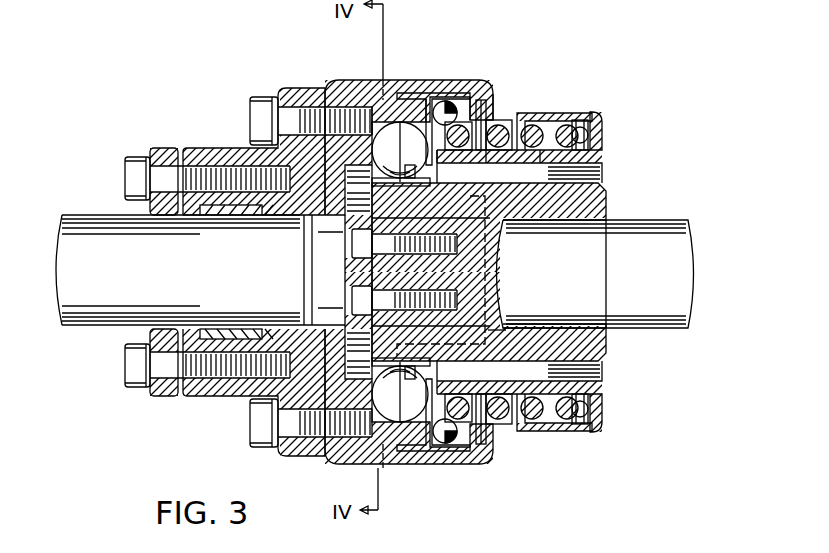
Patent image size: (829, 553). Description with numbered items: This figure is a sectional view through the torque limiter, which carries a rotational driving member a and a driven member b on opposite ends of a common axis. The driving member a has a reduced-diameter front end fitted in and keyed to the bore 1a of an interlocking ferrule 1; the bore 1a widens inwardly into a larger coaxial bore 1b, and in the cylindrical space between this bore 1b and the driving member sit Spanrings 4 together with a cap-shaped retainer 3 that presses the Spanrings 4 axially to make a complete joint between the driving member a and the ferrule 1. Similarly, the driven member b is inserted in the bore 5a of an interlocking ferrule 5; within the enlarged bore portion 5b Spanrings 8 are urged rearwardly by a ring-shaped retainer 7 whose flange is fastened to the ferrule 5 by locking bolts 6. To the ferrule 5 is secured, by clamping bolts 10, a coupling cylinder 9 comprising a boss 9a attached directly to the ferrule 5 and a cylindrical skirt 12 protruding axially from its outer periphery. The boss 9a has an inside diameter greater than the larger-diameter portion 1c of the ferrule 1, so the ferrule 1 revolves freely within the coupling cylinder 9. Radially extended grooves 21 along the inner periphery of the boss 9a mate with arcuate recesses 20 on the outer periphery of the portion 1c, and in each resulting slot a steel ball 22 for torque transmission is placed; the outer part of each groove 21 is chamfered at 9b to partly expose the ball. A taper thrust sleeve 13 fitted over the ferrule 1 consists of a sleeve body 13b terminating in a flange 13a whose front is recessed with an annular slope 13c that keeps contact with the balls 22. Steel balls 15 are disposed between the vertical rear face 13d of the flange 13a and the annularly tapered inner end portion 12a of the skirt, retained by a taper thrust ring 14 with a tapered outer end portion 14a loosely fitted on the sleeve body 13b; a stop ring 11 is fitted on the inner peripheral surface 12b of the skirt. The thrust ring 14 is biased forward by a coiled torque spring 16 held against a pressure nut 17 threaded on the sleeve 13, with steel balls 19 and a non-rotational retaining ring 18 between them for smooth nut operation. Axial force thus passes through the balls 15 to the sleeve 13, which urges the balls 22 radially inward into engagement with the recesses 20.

The interlocking ferrule 1 is at (598, 205).
The bore 1a is at (563, 323).
The larger coaxial bore 1b is at (378, 219).
The larger-diameter portion 1c is at (438, 172).
The retainer 3 is at (378, 276).
The Spanrings 4 is at (497, 332).
The interlocking ferrule 5 is at (213, 148).
The bore 5a is at (290, 216).
The enlarged bore portion 5b is at (198, 216).
The locking bolts 6 is at (140, 160).
The ring-shaped retainer 7 is at (164, 150).
The Spanrings 8 is at (234, 216).
The coupling cylinder 9 is at (404, 92).
The boss 9a is at (360, 272).
The chamfer 9b is at (396, 82).
The clamping bolts 10 is at (262, 105).
The stop ring 11 is at (490, 102).
The cylindrical skirt 12 is at (408, 96).
The annularly tapered inner end portion 12a is at (450, 98).
The inner peripheral surface 12b is at (496, 124).
The taper thrust sleeve 13 is at (603, 162).
The flange 13a is at (428, 118).
The sleeve body 13b is at (535, 152).
The annular slope 13c is at (400, 272).
The vertical rear face 13d is at (446, 152).
The taper thrust ring 14 is at (466, 118).
The annularly tapered outer end portion 14a is at (490, 152).
The steel balls 15 is at (444, 104).
The coiled torque spring 16 is at (540, 124).
The pressure nut 17 is at (566, 116).
The non-rotational retaining ring 18 is at (580, 121).
The steel balls 19 is at (596, 133).
The recesses 20 is at (380, 178).
The radially extended grooves 21 is at (374, 118).
The steel ball 22 is at (413, 180).
The rotational driving member a is at (656, 232).
The driven member b is at (100, 238).